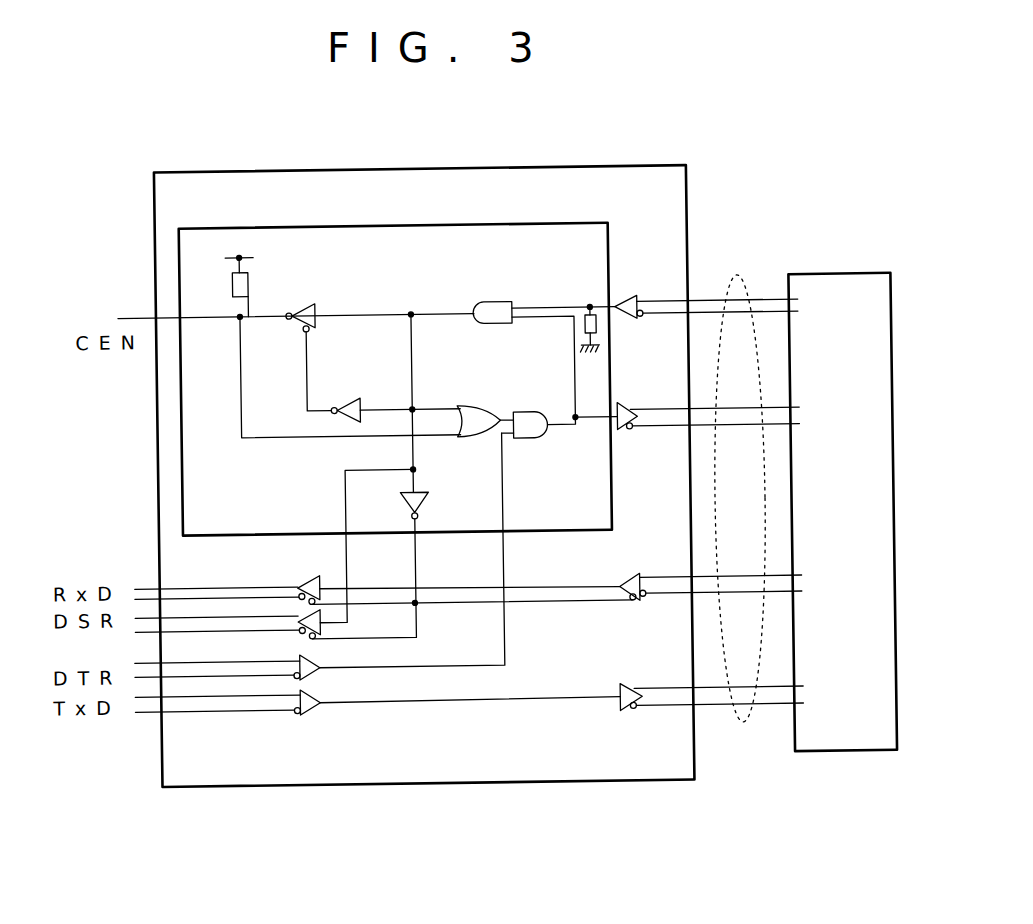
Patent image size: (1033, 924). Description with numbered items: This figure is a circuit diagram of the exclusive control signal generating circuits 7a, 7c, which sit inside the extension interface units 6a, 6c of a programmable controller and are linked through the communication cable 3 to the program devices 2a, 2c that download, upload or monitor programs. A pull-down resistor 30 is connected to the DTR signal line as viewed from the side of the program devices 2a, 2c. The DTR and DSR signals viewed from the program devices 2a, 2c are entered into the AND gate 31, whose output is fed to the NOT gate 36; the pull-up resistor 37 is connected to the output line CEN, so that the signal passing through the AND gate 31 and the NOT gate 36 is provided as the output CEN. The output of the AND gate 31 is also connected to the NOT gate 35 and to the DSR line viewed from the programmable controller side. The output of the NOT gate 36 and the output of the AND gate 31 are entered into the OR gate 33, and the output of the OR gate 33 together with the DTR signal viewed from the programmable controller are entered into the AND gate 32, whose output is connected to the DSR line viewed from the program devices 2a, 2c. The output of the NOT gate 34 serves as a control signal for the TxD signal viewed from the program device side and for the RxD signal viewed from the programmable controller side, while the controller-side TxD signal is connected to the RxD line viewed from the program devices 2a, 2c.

The program device 2a is at (841, 481).
The program device 2c is at (822, 278).
The communication cable 3 is at (739, 277).
The extension interface unit 6a is at (423, 457).
The extension interface unit 6c is at (449, 168).
The exclusive control signal generating circuit 7a is at (395, 361).
The exclusive control signal generating circuit 7c is at (459, 224).
The pull-down resistor 30 is at (583, 311).
The AND gate 31 is at (496, 301).
The AND gate 32 is at (529, 438).
The OR gate 33 is at (483, 405).
The NOT gate 34 is at (420, 497).
The NOT gate 35 is at (353, 396).
The NOT gate 36 is at (311, 304).
The pull-up resistor 37 is at (251, 288).